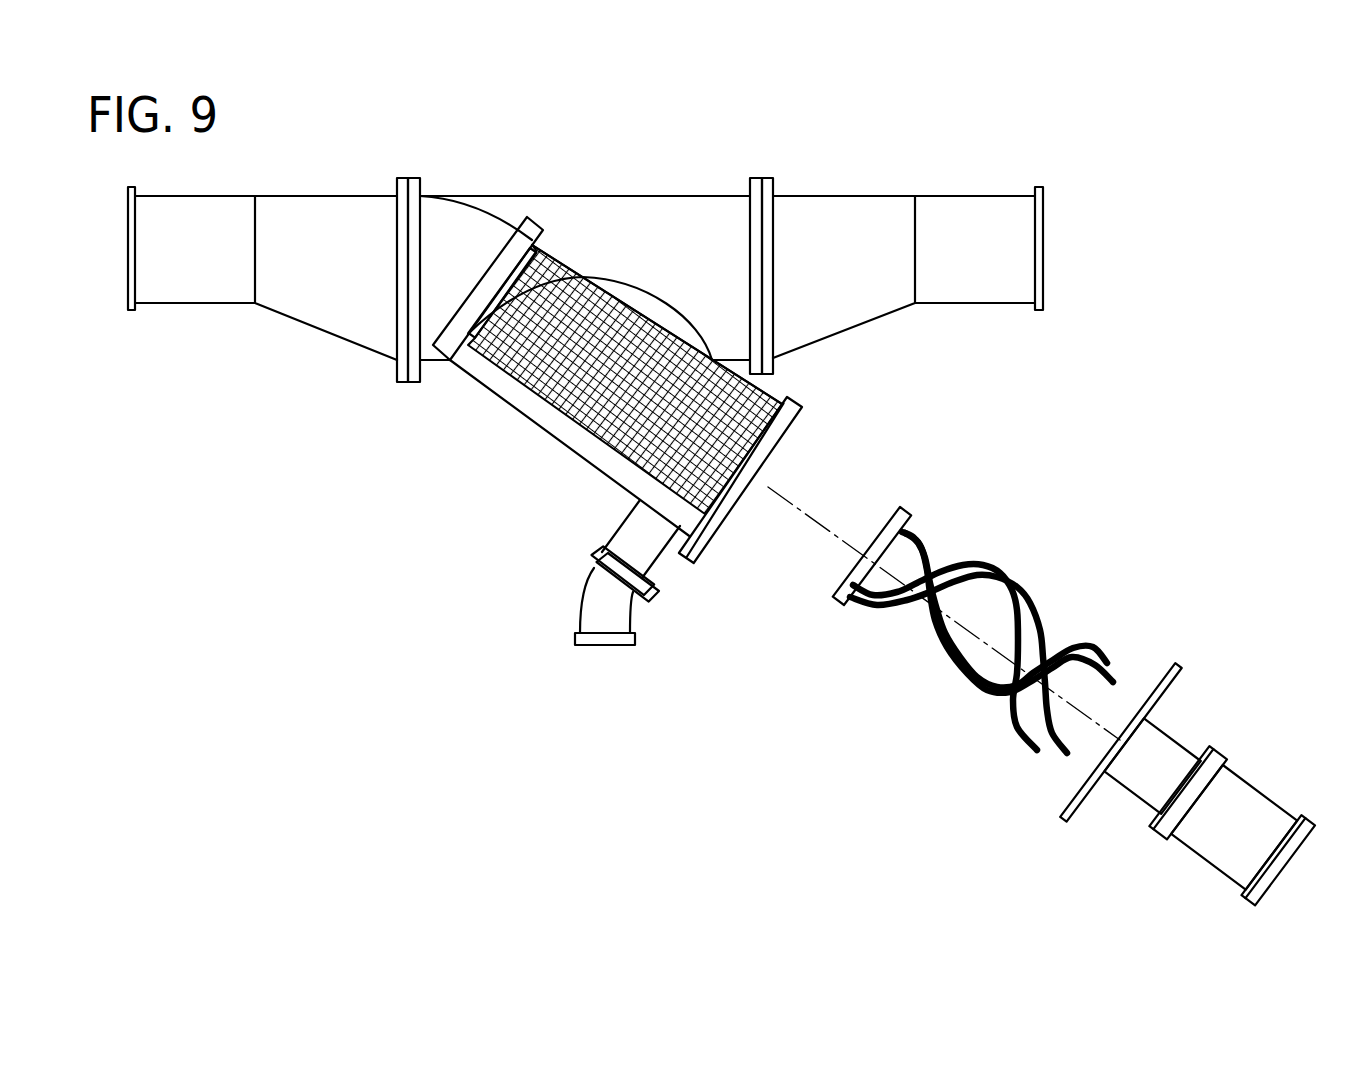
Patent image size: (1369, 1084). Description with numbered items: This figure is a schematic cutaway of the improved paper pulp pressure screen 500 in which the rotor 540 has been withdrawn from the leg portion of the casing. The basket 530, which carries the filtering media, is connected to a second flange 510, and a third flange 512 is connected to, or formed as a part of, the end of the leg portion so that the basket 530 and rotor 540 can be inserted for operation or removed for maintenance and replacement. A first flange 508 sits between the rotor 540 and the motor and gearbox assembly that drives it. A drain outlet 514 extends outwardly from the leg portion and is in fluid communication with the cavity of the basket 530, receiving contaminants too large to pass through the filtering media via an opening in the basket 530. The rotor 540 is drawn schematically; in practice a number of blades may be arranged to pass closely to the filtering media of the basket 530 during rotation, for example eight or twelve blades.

The improved paper pulp pressure screen 500 is at (289, 571).
The first flange 508 is at (1178, 663).
The second flange 510 is at (790, 410).
The third flange 512 is at (784, 398).
The drain outlet 514 is at (657, 570).
The basket 530 is at (570, 375).
The rotor 540 is at (1160, 657).